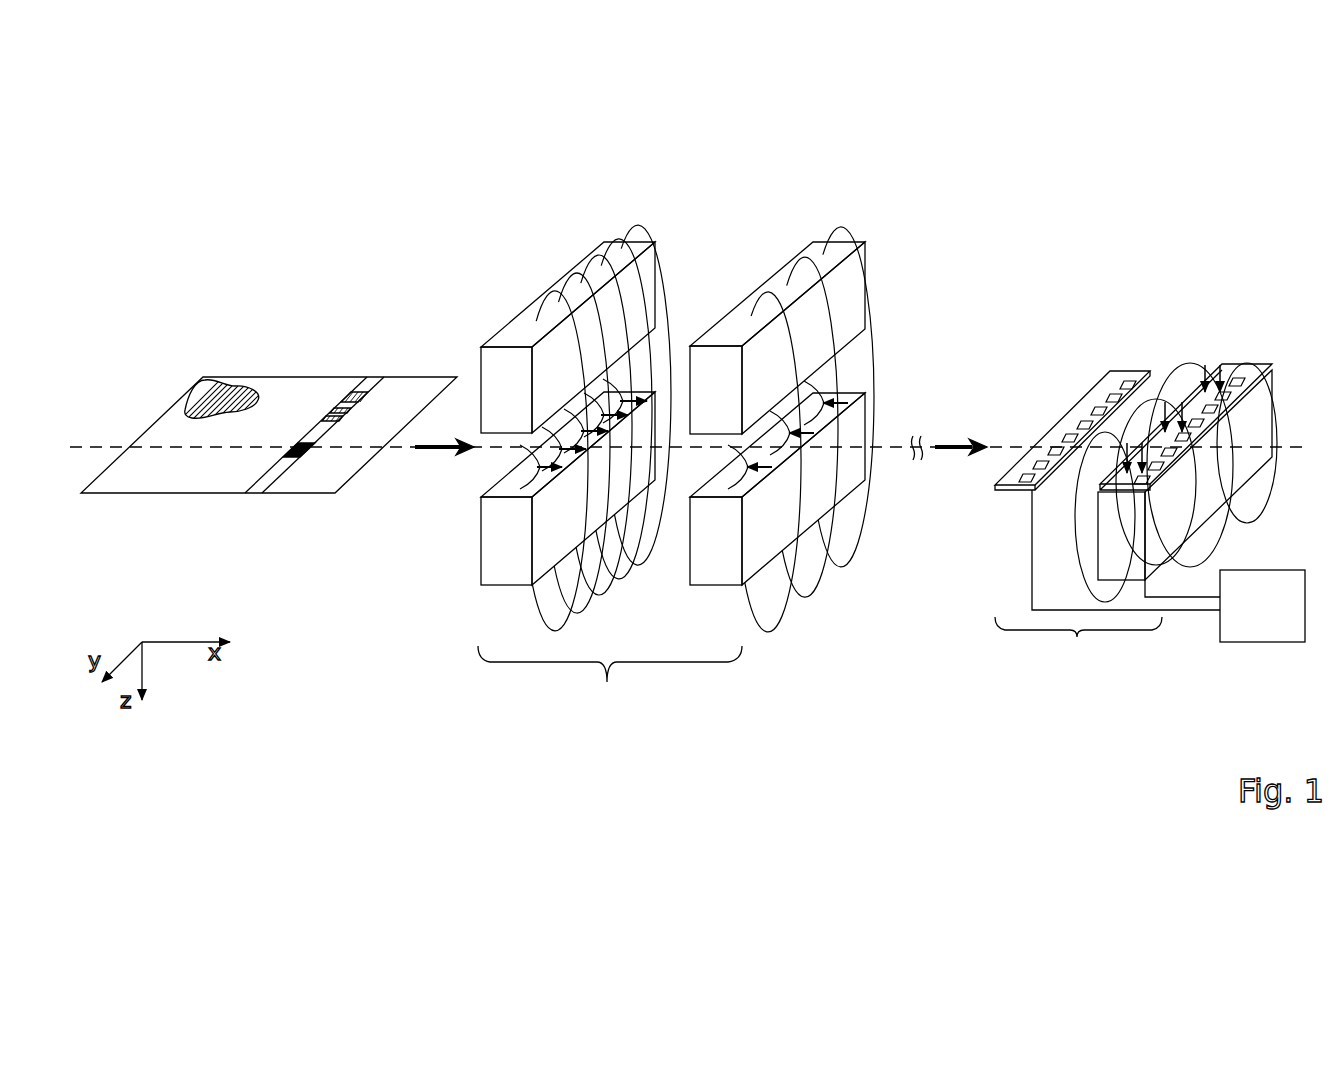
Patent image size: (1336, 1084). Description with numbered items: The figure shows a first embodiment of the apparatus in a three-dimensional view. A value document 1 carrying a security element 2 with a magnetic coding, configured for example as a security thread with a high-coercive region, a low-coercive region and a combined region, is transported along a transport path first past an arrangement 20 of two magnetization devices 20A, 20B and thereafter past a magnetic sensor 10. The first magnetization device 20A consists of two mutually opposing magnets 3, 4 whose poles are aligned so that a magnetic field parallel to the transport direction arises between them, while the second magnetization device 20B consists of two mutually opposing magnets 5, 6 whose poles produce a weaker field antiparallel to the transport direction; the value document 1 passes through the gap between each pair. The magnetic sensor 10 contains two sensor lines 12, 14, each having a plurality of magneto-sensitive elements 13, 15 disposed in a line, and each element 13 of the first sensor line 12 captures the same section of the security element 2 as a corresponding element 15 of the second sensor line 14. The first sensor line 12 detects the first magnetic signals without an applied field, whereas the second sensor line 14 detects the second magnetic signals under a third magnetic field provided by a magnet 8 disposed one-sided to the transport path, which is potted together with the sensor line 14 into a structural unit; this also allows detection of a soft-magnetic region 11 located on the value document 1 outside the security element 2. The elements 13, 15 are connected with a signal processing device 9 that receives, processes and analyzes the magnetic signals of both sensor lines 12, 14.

The value document 1 is at (157, 422).
The security element 2 is at (257, 482).
The soft-magnetic region 11 is at (202, 378).
The magnet 3 is at (502, 328).
The magnet 4 is at (482, 556).
The magnet 5 is at (865, 258).
The magnet 6 is at (866, 405).
The magnetization device 20A is at (554, 416).
The magnetization device 20B is at (802, 416).
The arrangement 20 is at (610, 680).
The magnet 8 is at (1275, 378).
The signal processing device 9 is at (1262, 606).
The magnetic sensor 10 is at (1158, 489).
The first sensor line 12 is at (1142, 358).
The magneto-sensitive elements 13 is at (1103, 398).
The second sensor line 14 is at (1254, 358).
The magneto-sensitive elements 15 is at (1236, 410).